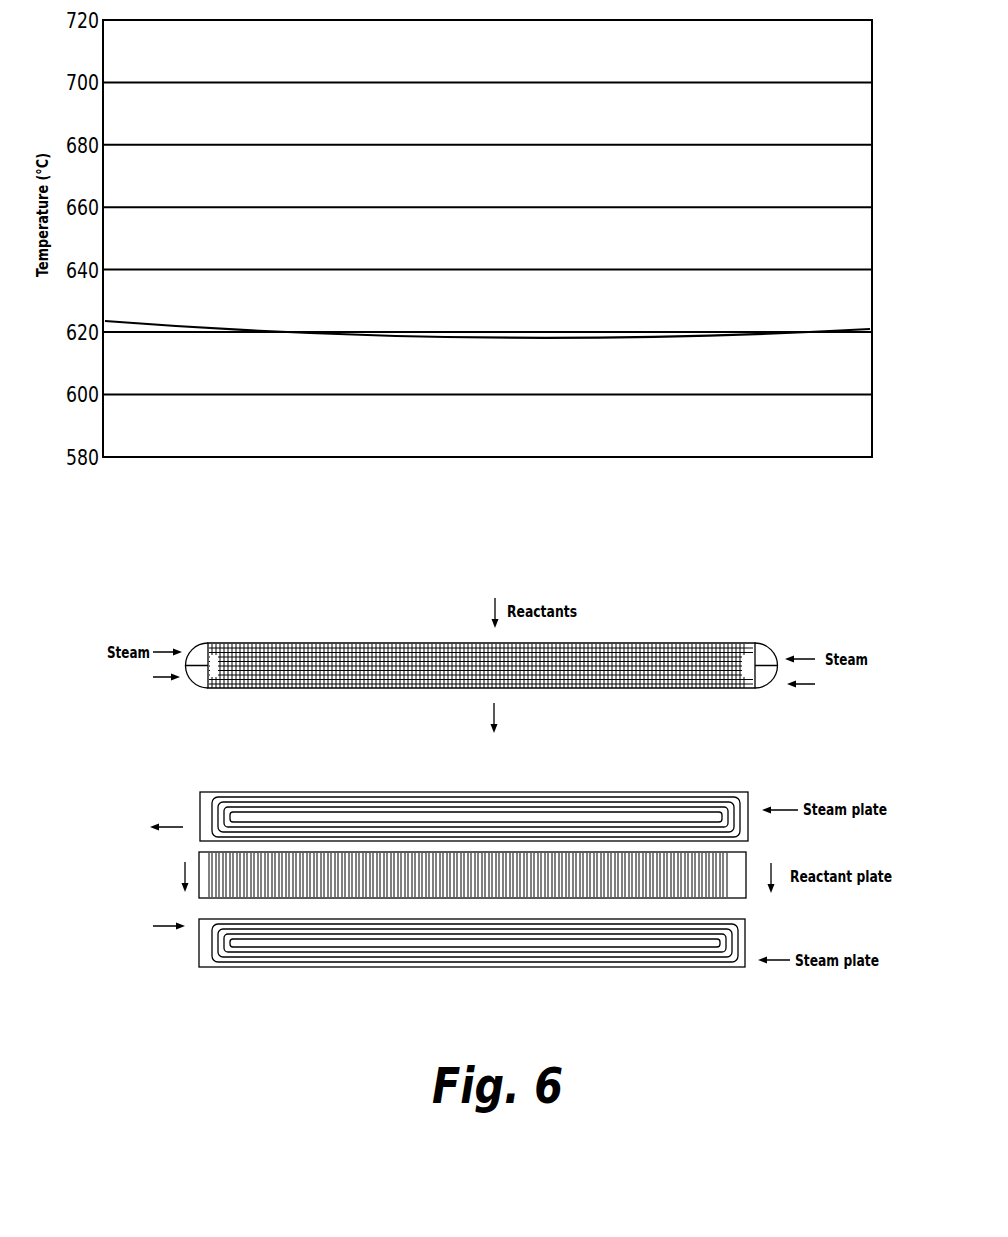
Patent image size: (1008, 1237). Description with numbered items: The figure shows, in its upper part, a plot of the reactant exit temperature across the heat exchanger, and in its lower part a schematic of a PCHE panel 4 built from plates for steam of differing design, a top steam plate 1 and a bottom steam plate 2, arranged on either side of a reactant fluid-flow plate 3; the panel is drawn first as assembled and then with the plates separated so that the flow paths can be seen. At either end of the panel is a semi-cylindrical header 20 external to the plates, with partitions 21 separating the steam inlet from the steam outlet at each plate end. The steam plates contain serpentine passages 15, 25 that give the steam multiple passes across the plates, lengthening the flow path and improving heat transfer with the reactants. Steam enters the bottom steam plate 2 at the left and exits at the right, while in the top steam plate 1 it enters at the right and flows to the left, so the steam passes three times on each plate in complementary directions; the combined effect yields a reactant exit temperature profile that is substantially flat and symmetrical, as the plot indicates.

The top steam plate 1 is at (459, 793).
The bottom steam plate 2 is at (455, 958).
The reactant fluid-flow plate 3 is at (197, 852).
The PCHE panel 4 is at (703, 644).
The serpentine passage 15 is at (578, 810).
The semi-cylindrical header 20 is at (196, 646).
The partition 21 is at (195, 679).
The serpentine passage 25 is at (558, 955).